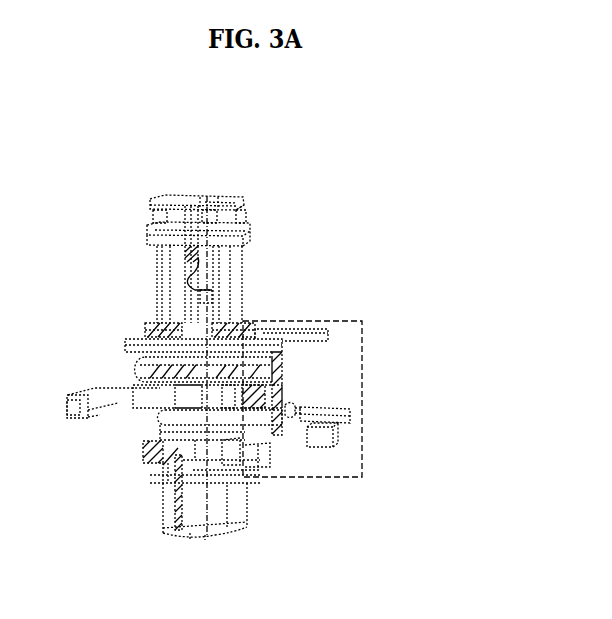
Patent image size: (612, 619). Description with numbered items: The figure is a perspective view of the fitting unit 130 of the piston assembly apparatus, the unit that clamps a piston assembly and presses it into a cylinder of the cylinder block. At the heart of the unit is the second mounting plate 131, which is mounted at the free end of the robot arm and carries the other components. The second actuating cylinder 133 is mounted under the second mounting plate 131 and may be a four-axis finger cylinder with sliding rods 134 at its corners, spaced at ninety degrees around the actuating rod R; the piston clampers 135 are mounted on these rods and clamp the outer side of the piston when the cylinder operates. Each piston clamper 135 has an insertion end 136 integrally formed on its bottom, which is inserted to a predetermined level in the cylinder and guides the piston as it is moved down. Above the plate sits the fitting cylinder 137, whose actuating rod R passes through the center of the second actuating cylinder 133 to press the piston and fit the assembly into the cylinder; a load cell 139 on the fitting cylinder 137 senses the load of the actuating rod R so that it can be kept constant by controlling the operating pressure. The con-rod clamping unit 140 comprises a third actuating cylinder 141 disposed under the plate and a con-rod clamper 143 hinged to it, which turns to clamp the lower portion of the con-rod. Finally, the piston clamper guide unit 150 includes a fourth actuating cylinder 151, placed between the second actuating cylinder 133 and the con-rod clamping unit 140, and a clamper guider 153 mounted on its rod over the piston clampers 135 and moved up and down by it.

The fitting unit 130 is at (232, 167).
The second mounting plate 131 is at (283, 323).
The second actuating cylinder 133 is at (160, 483).
The sliding rods 134 is at (147, 470).
The piston clampers 135 is at (163, 518).
The insertion end 136 is at (199, 540).
The fitting cylinder 137 is at (172, 274).
The load cell 139 is at (191, 197).
The con-rod clamping unit 140 is at (417, 403).
The third actuating cylinder 141 is at (297, 372).
The con-rod clamper 143 is at (127, 398).
The piston clamper guide unit 150 is at (350, 513).
The fourth actuating cylinder 151 is at (265, 400).
The clamper guider 153 is at (258, 483).
The actuating rod R is at (150, 357).